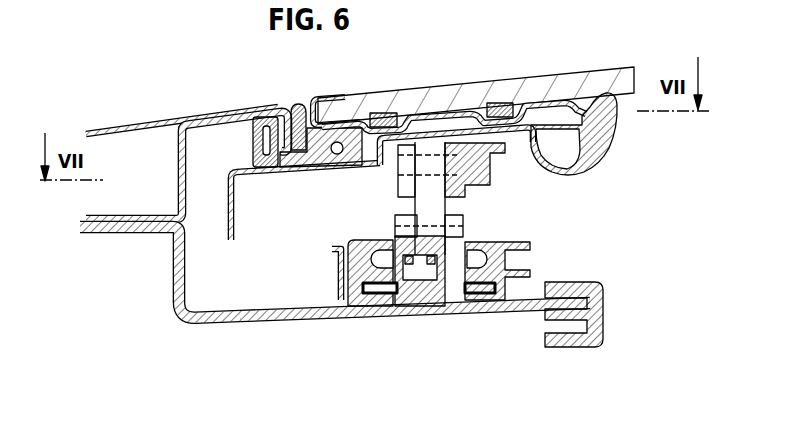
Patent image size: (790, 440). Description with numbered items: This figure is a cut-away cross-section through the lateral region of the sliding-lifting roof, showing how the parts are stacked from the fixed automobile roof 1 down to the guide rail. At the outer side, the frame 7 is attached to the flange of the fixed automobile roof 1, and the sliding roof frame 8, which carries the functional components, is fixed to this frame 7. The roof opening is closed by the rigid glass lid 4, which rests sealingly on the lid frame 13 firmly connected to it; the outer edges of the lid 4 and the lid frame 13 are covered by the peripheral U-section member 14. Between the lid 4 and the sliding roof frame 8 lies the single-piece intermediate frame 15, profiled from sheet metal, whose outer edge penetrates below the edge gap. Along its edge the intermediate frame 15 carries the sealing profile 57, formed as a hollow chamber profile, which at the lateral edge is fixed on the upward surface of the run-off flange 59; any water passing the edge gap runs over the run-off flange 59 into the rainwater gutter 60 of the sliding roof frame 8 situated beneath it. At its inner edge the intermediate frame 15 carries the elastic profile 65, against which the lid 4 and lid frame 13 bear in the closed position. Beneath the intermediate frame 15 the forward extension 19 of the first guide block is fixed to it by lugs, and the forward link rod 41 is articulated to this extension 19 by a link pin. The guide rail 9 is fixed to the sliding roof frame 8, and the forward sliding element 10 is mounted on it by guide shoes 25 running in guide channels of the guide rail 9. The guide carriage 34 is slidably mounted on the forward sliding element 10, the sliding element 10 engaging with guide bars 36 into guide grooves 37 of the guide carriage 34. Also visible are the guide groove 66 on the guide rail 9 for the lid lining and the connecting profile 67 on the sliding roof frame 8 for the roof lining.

The automobile roof 1 is at (134, 128).
The lid 4 is at (577, 83).
The frame 7 is at (180, 157).
The sliding roof frame 8 is at (212, 322).
The guide rail 9 is at (353, 245).
The forward sliding element 10 is at (408, 304).
The lid frame 13 is at (547, 103).
The U-section member 14 is at (320, 95).
The intermediate frame 15 is at (445, 128).
The forward extension 19 is at (487, 168).
The guide shoes 25 is at (373, 293).
The guide carriage 34 is at (466, 233).
The guide bars 36 is at (408, 253).
The guide grooves 37 is at (428, 262).
The forward link rod 41 is at (430, 188).
The sealing profile 57 is at (243, 135).
The run-off flange 59 is at (243, 177).
The rainwater gutter 60 is at (273, 310).
The elastic profile 65 is at (590, 150).
The guide groove 66 is at (517, 258).
The connecting profile 67 is at (597, 320).